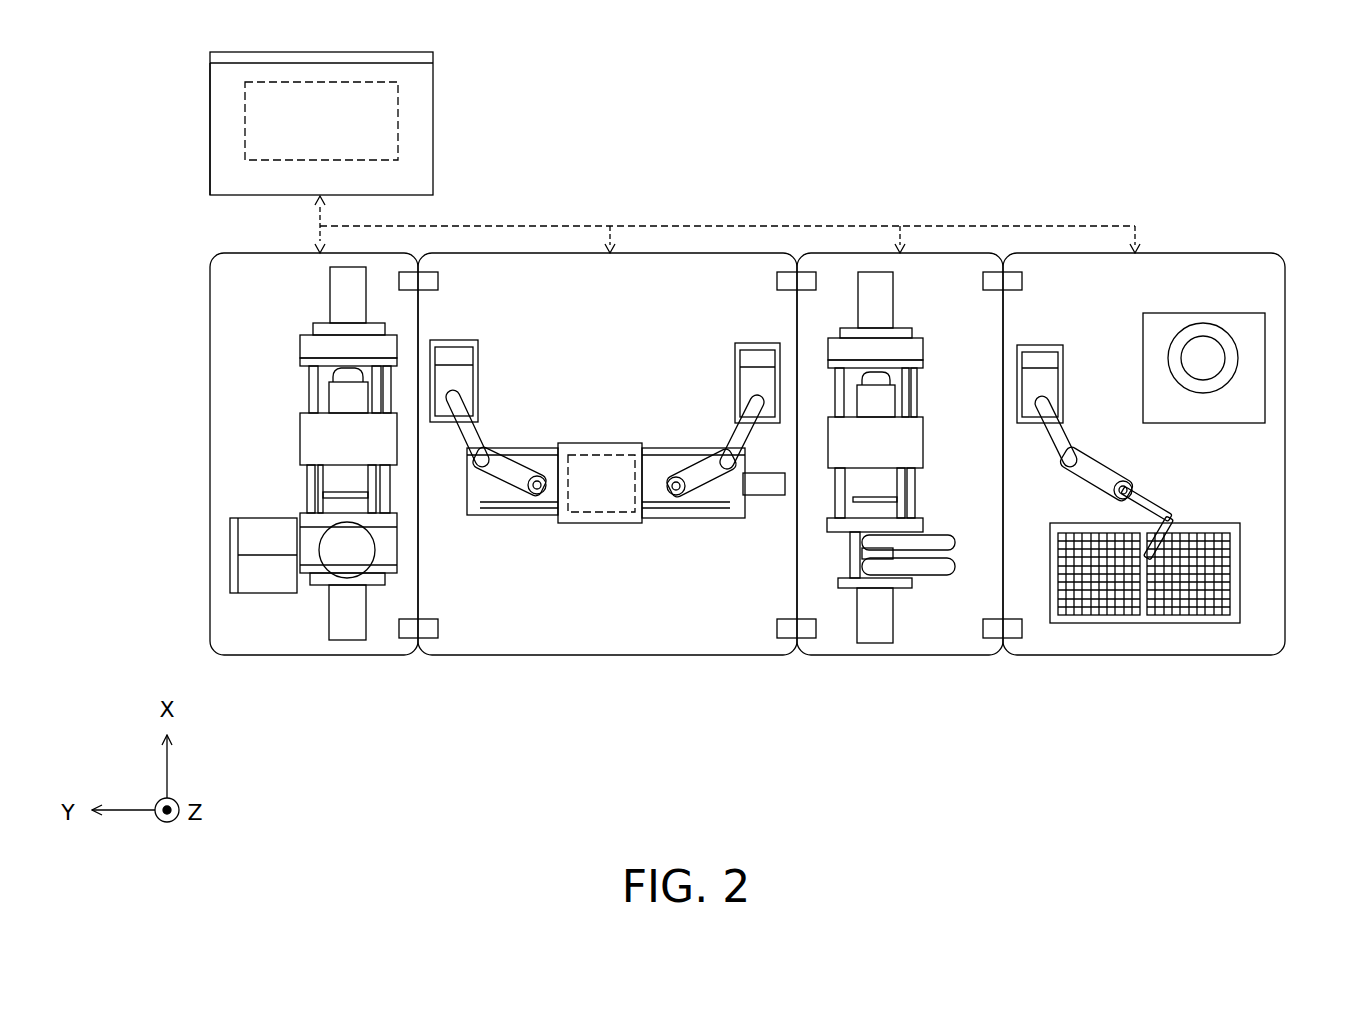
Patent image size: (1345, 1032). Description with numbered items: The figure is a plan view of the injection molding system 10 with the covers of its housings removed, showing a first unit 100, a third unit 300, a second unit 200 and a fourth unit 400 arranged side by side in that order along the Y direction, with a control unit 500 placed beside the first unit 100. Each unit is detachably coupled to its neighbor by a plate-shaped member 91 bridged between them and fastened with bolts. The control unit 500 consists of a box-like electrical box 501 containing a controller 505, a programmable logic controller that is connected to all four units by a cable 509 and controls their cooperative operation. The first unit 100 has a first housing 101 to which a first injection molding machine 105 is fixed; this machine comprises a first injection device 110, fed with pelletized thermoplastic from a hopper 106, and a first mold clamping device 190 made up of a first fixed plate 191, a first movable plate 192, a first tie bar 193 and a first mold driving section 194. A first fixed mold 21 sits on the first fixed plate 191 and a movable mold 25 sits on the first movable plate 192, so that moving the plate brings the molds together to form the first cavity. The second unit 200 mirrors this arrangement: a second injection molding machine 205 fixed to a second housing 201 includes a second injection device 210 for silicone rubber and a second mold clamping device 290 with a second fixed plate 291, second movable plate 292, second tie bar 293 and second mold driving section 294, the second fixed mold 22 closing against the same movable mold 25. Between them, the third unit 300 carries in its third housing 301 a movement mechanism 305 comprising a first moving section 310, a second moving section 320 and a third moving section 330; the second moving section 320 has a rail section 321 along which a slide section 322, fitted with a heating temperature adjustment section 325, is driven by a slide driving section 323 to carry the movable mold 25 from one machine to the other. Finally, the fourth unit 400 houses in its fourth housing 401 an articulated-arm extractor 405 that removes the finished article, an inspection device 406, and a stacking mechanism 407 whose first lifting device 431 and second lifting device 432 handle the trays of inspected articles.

The injection molding system 10 is at (1244, 124).
The first fixed mold 21 is at (323, 497).
The second fixed mold 22 is at (905, 496).
The movable mold 25 is at (323, 483).
The plate-shaped member 91 is at (418, 640).
The first unit 100 is at (304, 752).
The first housing 101 is at (329, 657).
The first injection molding machine 105 is at (289, 631).
The hopper 106 is at (319, 548).
The first injection device 110 is at (296, 600).
The first mold clamping device 190 is at (561, 431).
The first fixed plate 191 is at (300, 525).
The first movable plate 192 is at (300, 430).
The first tie bar 193 is at (300, 352).
The first mold driving section 194 is at (330, 300).
The second unit 200 is at (906, 754).
The second housing 201 is at (885, 647).
The second injection molding machine 205 is at (845, 633).
The second injection device 210 is at (926, 603).
The second mold clamping device 290 is at (901, 442).
The second fixed plate 291 is at (923, 525).
The second movable plate 292 is at (923, 436).
The second tie bar 293 is at (916, 398).
The second mold driving section 294 is at (893, 308).
The third unit 300 is at (598, 752).
The third housing 301 is at (593, 656).
The movement mechanism 305 is at (518, 578).
The first moving section 310 is at (470, 340).
The second moving section 320 is at (626, 536).
The rail section 321 is at (540, 517).
The slide section 322 is at (632, 443).
The slide driving section 323 is at (768, 497).
The temperature adjustment section 325 is at (585, 455).
The third moving section 330 is at (760, 343).
The fourth unit 400 is at (1143, 759).
The fourth housing 401 is at (1146, 629).
The extractor 405 is at (1045, 345).
The inspection device 406 is at (1200, 313).
The stacking mechanism 407 is at (1256, 630).
The first lifting device 431 is at (1077, 624).
The second lifting device 432 is at (1212, 624).
The control unit 500 is at (466, 72).
The electrical box 501 is at (210, 122).
The controller 505 is at (398, 122).
The cable 509 is at (630, 226).